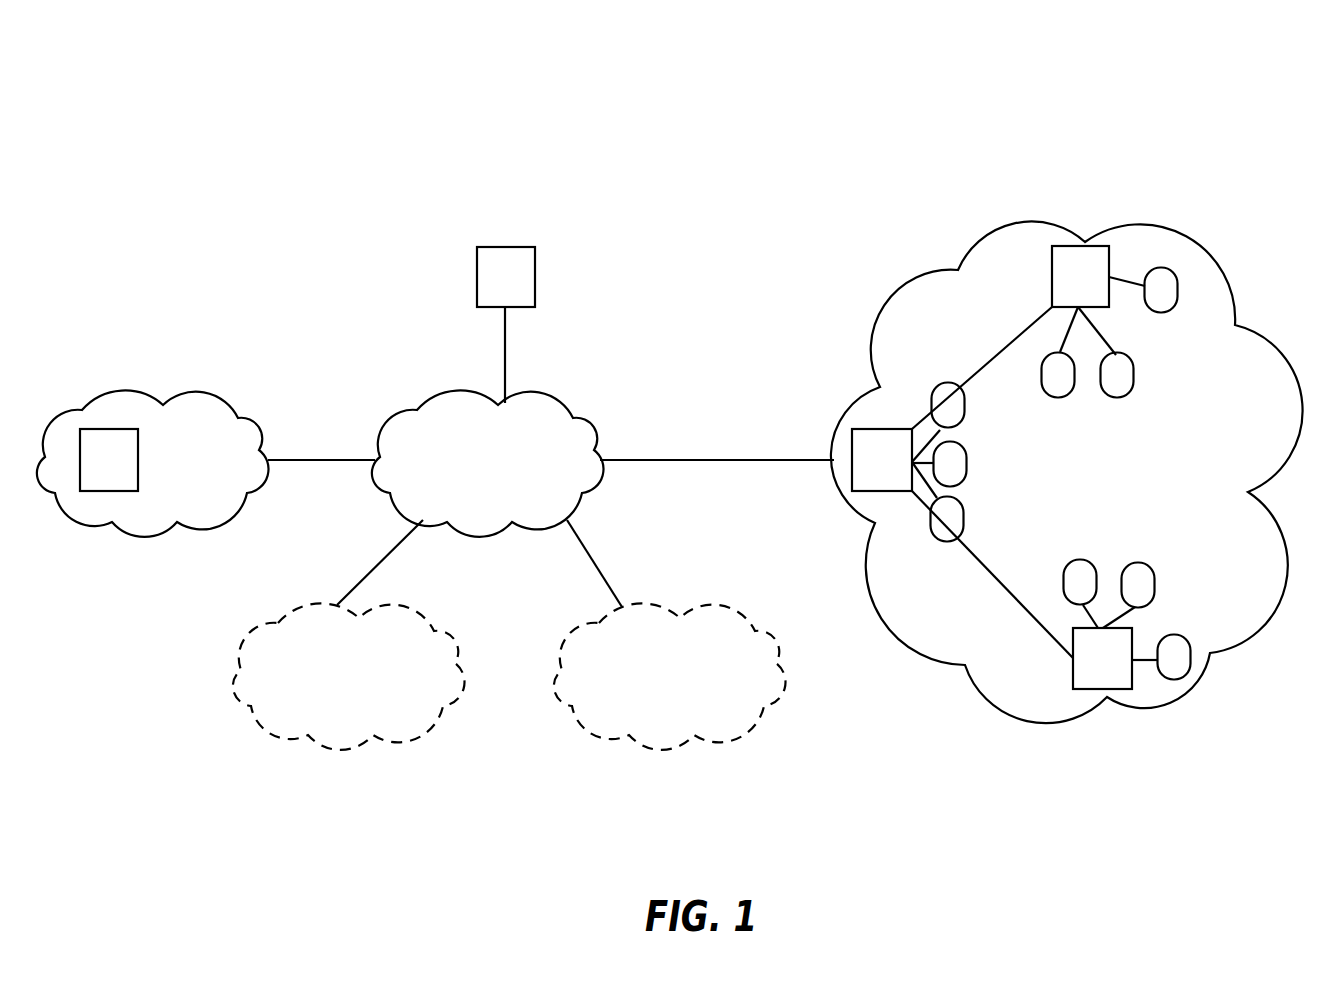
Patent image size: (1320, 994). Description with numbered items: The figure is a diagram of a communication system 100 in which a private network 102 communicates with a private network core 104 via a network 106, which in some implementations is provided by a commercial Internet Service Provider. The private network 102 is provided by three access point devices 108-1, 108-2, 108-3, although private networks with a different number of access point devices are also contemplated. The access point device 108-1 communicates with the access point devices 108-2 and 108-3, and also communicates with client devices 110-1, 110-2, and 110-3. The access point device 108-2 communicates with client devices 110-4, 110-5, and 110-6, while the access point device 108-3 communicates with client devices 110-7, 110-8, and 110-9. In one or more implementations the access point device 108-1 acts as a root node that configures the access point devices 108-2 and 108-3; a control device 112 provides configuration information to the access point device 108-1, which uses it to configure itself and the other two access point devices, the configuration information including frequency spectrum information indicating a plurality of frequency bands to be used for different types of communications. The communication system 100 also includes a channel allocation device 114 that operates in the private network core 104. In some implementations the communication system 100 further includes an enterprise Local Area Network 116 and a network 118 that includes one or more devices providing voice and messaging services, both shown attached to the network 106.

The communication system 100 is at (1192, 58).
The private network 102 is at (1218, 260).
The private network core 104 is at (213, 393).
The network 106 is at (575, 403).
The access point device 108-1 is at (857, 430).
The access point device 108-2 is at (1051, 263).
The access point device 108-3 is at (1072, 677).
The client device 110-1 is at (960, 384).
The client device 110-2 is at (967, 463).
The client device 110-3 is at (964, 517).
The client device 110-4 is at (1062, 398).
The client device 110-5 is at (1122, 398).
The client device 110-6 is at (1166, 312).
The client device 110-7 is at (1066, 573).
The client device 110-8 is at (1152, 548).
The client device 110-9 is at (1193, 621).
The control device 112 is at (535, 273).
The channel allocation device 114 is at (138, 457).
The enterprise Local Area Network (LAN) 116 is at (417, 610).
The network 118 is at (738, 610).